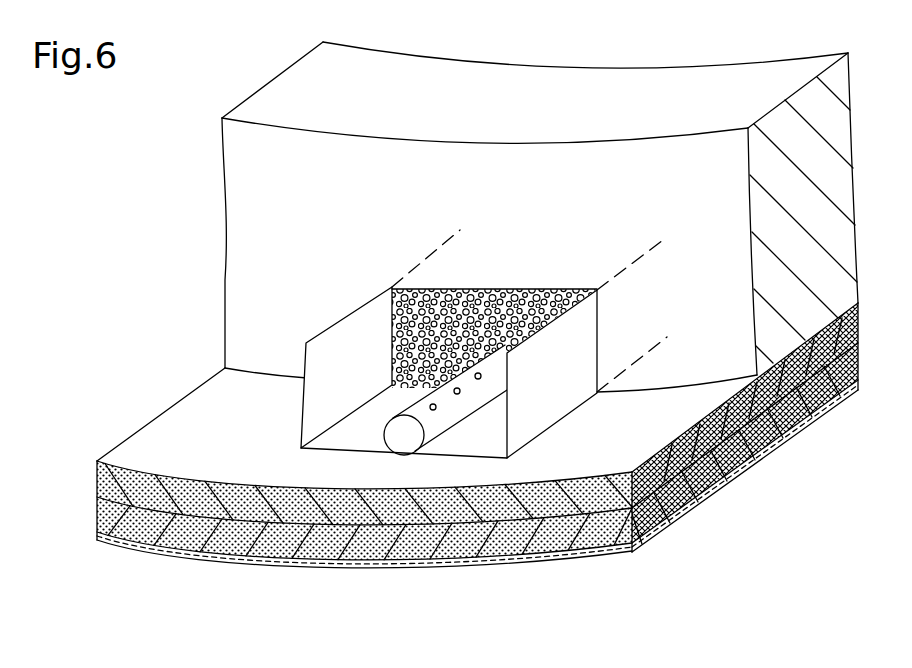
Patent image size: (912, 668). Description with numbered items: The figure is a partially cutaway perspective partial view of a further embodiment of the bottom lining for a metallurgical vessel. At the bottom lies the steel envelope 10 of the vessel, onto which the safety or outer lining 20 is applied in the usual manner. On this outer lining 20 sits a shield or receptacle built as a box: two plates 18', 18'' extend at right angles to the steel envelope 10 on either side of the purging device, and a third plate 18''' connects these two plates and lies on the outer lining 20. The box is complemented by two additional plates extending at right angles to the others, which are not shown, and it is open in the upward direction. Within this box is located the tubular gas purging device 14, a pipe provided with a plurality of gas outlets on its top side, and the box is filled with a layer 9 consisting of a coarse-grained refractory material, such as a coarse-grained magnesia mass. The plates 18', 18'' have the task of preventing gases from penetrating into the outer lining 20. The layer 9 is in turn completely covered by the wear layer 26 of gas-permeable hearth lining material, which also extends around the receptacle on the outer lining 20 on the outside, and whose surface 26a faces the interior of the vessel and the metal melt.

The wear layer 26 is at (499, 201).
The surface of the wear layer 26a is at (438, 85).
The plate 18' is at (380, 339).
The plate 18'' is at (591, 349).
The plate 18''' is at (450, 459).
The layer of coarse-grained refractory material 9 is at (443, 318).
The gas purging device 14 is at (430, 425).
The outer lining 20 is at (477, 459).
The steel envelope 10 is at (552, 560).